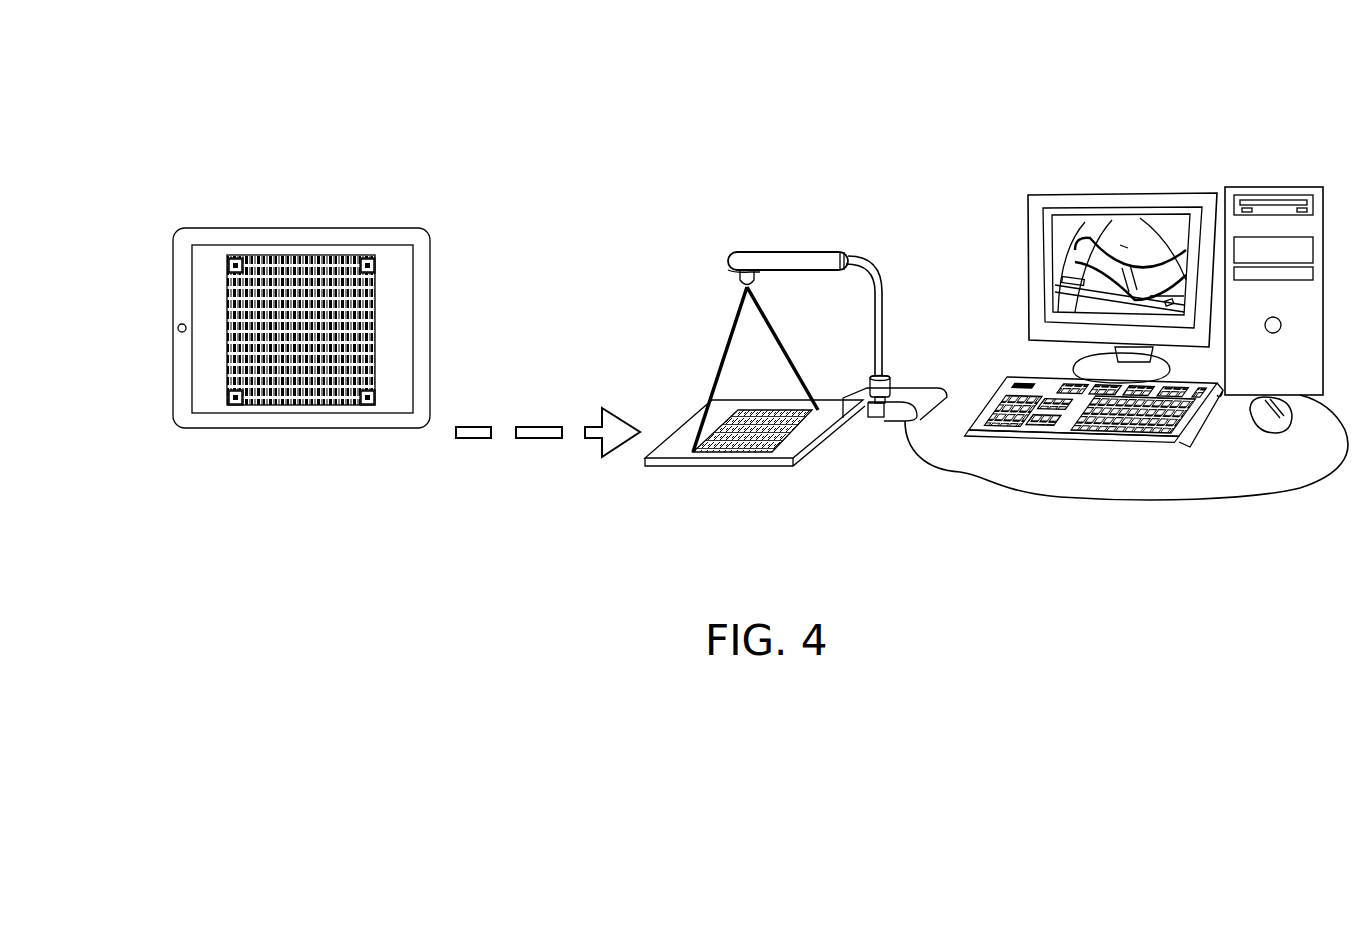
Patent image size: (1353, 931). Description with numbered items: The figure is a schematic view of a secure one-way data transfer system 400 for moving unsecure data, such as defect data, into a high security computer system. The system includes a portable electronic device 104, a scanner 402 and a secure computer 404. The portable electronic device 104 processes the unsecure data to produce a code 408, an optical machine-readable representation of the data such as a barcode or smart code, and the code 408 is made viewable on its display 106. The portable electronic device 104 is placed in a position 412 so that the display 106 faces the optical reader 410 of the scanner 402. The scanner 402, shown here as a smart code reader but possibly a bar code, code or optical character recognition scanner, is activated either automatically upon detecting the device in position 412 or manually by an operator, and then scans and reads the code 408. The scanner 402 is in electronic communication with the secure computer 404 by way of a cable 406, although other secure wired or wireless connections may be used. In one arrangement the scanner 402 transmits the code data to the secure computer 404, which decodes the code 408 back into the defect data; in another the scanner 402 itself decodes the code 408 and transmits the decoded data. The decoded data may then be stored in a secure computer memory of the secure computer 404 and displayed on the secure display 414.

The secure one-way data transfer system 400 is at (346, 110).
The portable electronic device 104 is at (225, 430).
The display 106 is at (388, 402).
The code 408 is at (298, 280).
The scanner 402 is at (845, 255).
The optical reader 410 is at (738, 280).
The position 412 is at (690, 486).
The cable 406 is at (1083, 498).
The secure computer 404 is at (1250, 185).
The secure display 414 is at (1093, 222).